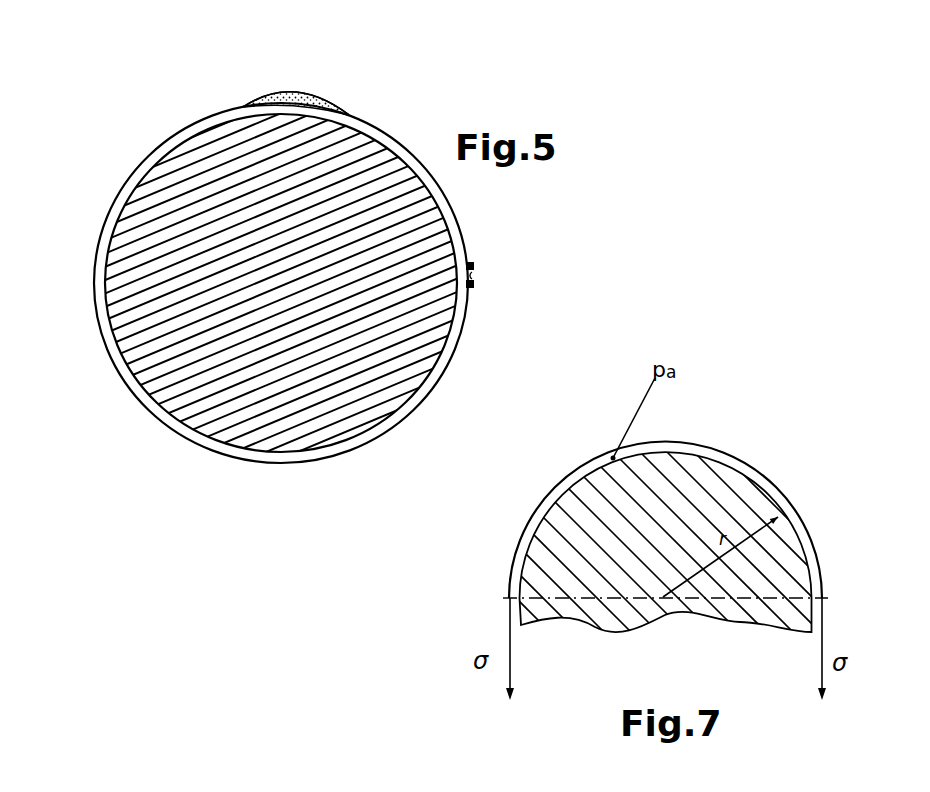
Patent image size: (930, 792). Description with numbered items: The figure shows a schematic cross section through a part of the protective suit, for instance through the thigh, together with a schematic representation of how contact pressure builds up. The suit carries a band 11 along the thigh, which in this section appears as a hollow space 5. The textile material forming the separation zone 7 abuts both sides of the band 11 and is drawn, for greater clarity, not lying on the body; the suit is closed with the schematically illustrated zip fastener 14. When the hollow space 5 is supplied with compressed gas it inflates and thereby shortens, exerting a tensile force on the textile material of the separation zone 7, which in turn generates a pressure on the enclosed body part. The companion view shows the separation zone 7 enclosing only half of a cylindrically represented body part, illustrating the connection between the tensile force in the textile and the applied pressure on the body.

In FIG. 5, the hollow space 5 is at (318, 93).
In FIG. 5, the separation zone 7 is at (94, 270).
In FIG. 7, the separation zone 7 is at (744, 465).
In FIG. 5, the band 11 is at (292, 93).
In FIG. 5, the zip fastener 14 is at (477, 277).